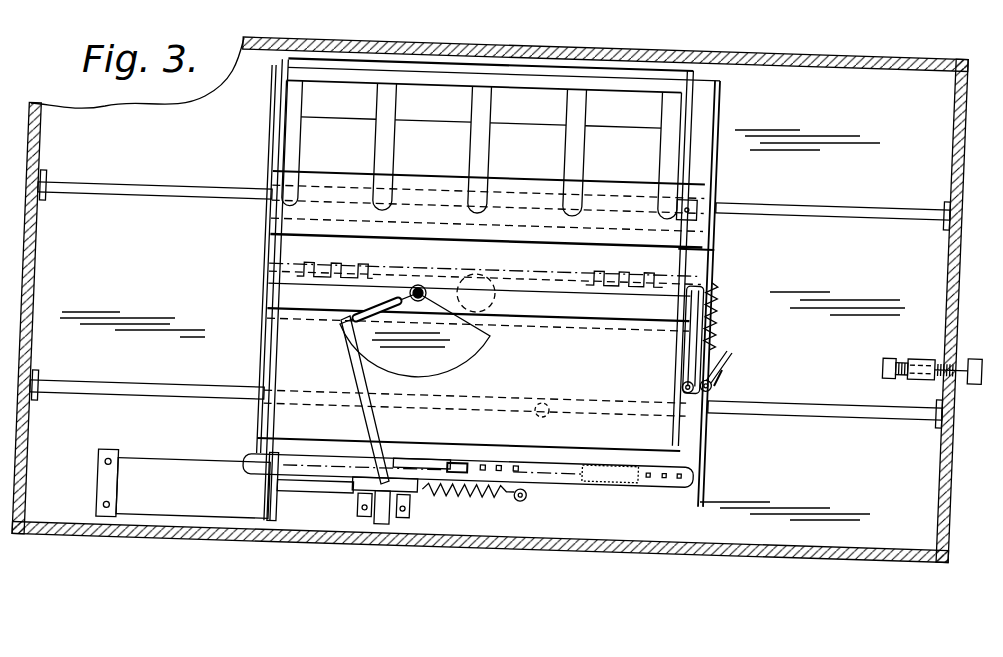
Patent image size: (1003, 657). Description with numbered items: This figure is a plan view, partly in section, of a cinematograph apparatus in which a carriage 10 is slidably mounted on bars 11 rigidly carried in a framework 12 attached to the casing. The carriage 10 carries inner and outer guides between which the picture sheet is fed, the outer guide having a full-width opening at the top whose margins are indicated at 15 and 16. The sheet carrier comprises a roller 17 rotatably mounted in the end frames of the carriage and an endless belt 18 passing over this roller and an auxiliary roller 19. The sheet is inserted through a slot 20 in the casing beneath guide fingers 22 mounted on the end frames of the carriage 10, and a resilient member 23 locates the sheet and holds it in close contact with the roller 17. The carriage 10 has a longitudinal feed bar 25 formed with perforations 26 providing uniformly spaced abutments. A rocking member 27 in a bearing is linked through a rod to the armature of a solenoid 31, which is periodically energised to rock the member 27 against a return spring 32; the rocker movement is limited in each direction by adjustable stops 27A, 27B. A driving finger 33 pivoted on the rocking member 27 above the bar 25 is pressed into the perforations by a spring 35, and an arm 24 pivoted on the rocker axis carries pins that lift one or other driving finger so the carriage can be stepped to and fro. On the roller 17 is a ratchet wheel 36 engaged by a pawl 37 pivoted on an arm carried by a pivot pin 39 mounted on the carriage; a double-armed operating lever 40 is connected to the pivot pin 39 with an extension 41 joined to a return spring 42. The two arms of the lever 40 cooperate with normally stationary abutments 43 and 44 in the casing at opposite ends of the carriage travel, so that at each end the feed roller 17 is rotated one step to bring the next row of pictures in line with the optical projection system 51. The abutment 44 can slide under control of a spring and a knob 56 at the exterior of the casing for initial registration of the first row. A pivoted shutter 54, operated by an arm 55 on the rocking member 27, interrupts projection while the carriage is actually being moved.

The carriage 10 is at (706, 278).
The bars 11 is at (218, 182).
The framework 12 is at (41, 141).
The margin of opening 15 is at (318, 152).
The margin of opening 16 is at (355, 320).
The roller 17 is at (562, 323).
The endless belt 18 is at (688, 282).
The auxiliary roller 19 is at (541, 227).
The slot 20 is at (478, 55).
The guide fingers 22 is at (470, 147).
The resilient member 23 is at (342, 278).
The arm 24 is at (499, 498).
The longitudinal feed bar 25 is at (563, 483).
The perforations 26 is at (515, 467).
The rocking member 27 is at (360, 490).
The adjustable stop 27A is at (360, 500).
The adjustable stop 27B is at (420, 497).
The solenoid 31 is at (202, 460).
The return spring 32 is at (447, 497).
The driving finger 33 is at (464, 462).
The spring 35 is at (402, 458).
The ratchet wheel 36 is at (714, 288).
The pawl 37 is at (692, 362).
The pivot pin 39 is at (712, 387).
The double-armed operating lever 40 is at (731, 350).
The extension 41 is at (713, 377).
The return spring 42 is at (715, 320).
The abutment 43 is at (557, 412).
The abutment 44 is at (880, 368).
The optical projection system 51 is at (495, 297).
The pivoted shutter 54 is at (493, 338).
The arm 55 is at (377, 423).
The knob 56 is at (967, 357).